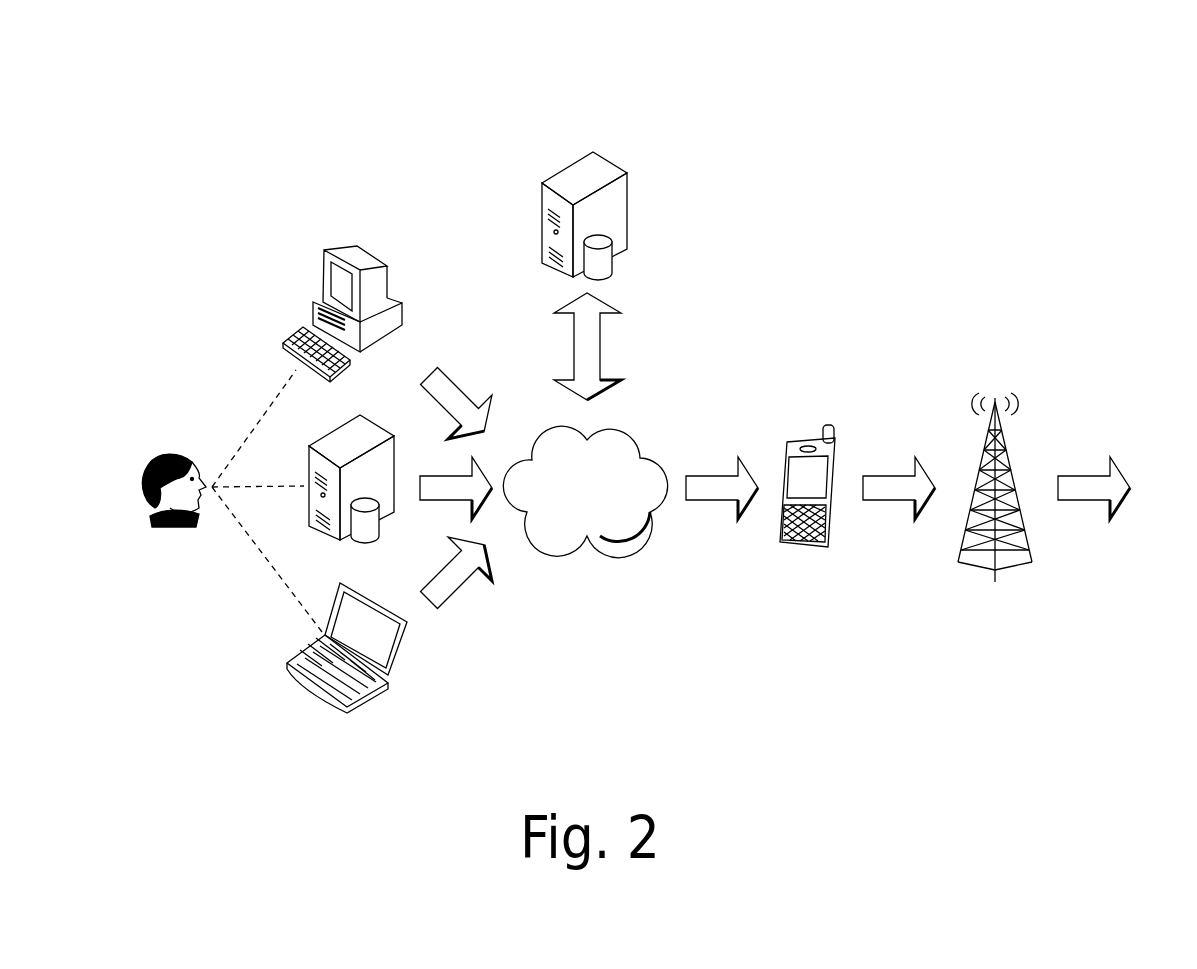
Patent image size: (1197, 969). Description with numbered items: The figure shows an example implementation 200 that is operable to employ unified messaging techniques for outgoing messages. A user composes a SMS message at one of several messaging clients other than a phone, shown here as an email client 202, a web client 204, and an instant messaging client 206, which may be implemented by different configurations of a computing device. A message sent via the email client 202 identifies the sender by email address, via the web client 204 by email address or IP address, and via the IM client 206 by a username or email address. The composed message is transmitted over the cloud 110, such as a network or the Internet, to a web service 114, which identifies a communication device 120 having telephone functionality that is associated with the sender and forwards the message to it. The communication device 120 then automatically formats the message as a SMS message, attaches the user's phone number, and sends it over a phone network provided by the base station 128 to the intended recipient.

The example implementation 200 is at (1081, 101).
The email client 202 is at (325, 250).
The web client 204 is at (313, 442).
The instant messaging client 206 is at (295, 655).
The web service 114 is at (567, 166).
The cloud 110 is at (573, 506).
The communication device 120 is at (807, 440).
The base station 128 is at (990, 445).